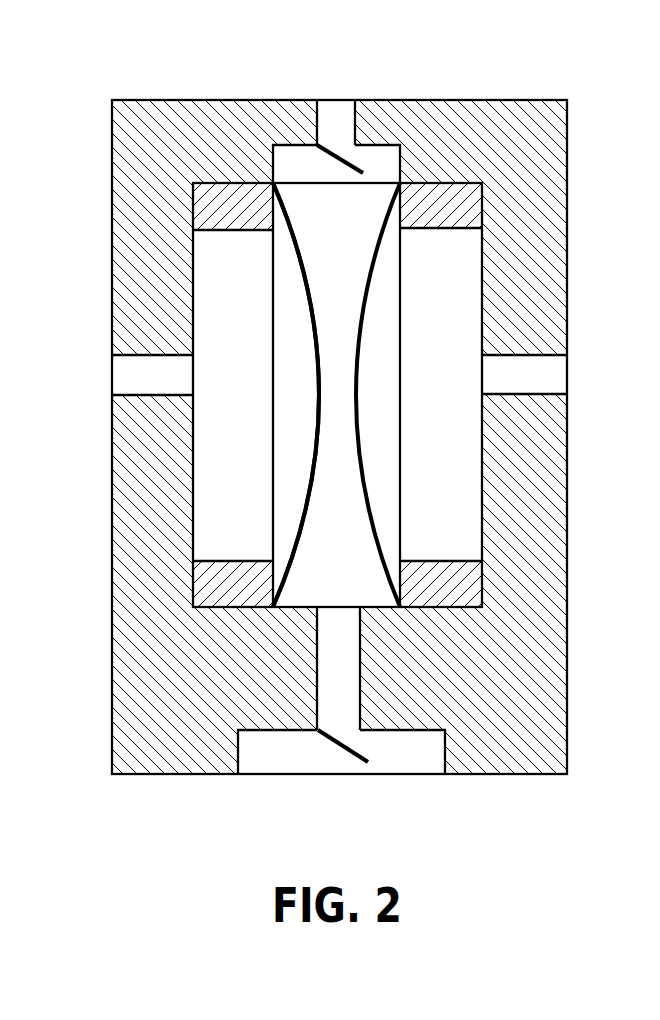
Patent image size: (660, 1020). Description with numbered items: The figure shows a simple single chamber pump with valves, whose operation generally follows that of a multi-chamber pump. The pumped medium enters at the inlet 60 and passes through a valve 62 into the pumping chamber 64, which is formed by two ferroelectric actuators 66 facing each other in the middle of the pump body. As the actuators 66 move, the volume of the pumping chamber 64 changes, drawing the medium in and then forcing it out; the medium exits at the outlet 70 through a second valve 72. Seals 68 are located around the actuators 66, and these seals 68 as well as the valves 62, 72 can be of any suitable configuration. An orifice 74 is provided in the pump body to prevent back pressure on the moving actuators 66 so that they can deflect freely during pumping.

The inlet 60 is at (337, 98).
The valve 62 is at (380, 162).
The pumping chamber 64 is at (343, 508).
The ferroelectric actuators 66 is at (310, 323).
The seals 68 is at (225, 587).
The outlet 70 is at (280, 777).
The valve 72 is at (337, 743).
The orifice 74 is at (132, 381).